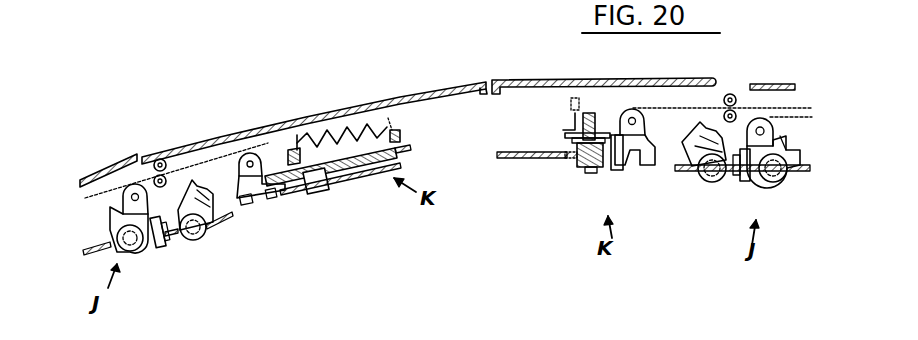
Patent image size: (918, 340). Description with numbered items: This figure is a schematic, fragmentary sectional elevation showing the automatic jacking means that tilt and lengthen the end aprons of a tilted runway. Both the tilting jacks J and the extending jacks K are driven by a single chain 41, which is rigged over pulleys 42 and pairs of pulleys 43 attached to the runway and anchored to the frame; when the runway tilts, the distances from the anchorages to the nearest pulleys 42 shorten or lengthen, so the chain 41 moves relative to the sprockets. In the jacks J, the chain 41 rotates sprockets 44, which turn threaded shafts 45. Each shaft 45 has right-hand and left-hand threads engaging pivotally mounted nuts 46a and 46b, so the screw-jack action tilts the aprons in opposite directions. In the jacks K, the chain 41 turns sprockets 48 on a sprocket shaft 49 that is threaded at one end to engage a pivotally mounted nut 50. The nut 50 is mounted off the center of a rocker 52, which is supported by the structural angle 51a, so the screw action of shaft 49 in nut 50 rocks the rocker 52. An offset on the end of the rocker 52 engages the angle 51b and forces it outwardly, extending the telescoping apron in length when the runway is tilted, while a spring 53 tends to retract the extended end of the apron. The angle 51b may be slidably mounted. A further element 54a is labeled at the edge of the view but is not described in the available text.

The chain 41 is at (226, 156).
The pulley 42 is at (130, 198).
The pair of pulleys 43 is at (157, 158).
The sprocket 44 is at (170, 244).
The threaded shaft 45 is at (105, 250).
The pivotally mounted nut 46a is at (135, 252).
The pivotally mounted nut 46b is at (208, 228).
The sprocket 48 is at (275, 190).
The sprocket shaft 49 is at (348, 178).
The pivotally mounted nut 50 is at (325, 195).
The structural angle 51a is at (296, 148).
The angle 51b is at (400, 137).
The rocker 52 is at (402, 160).
The spring 53 is at (350, 128).
The guide 54a is at (109, 8).